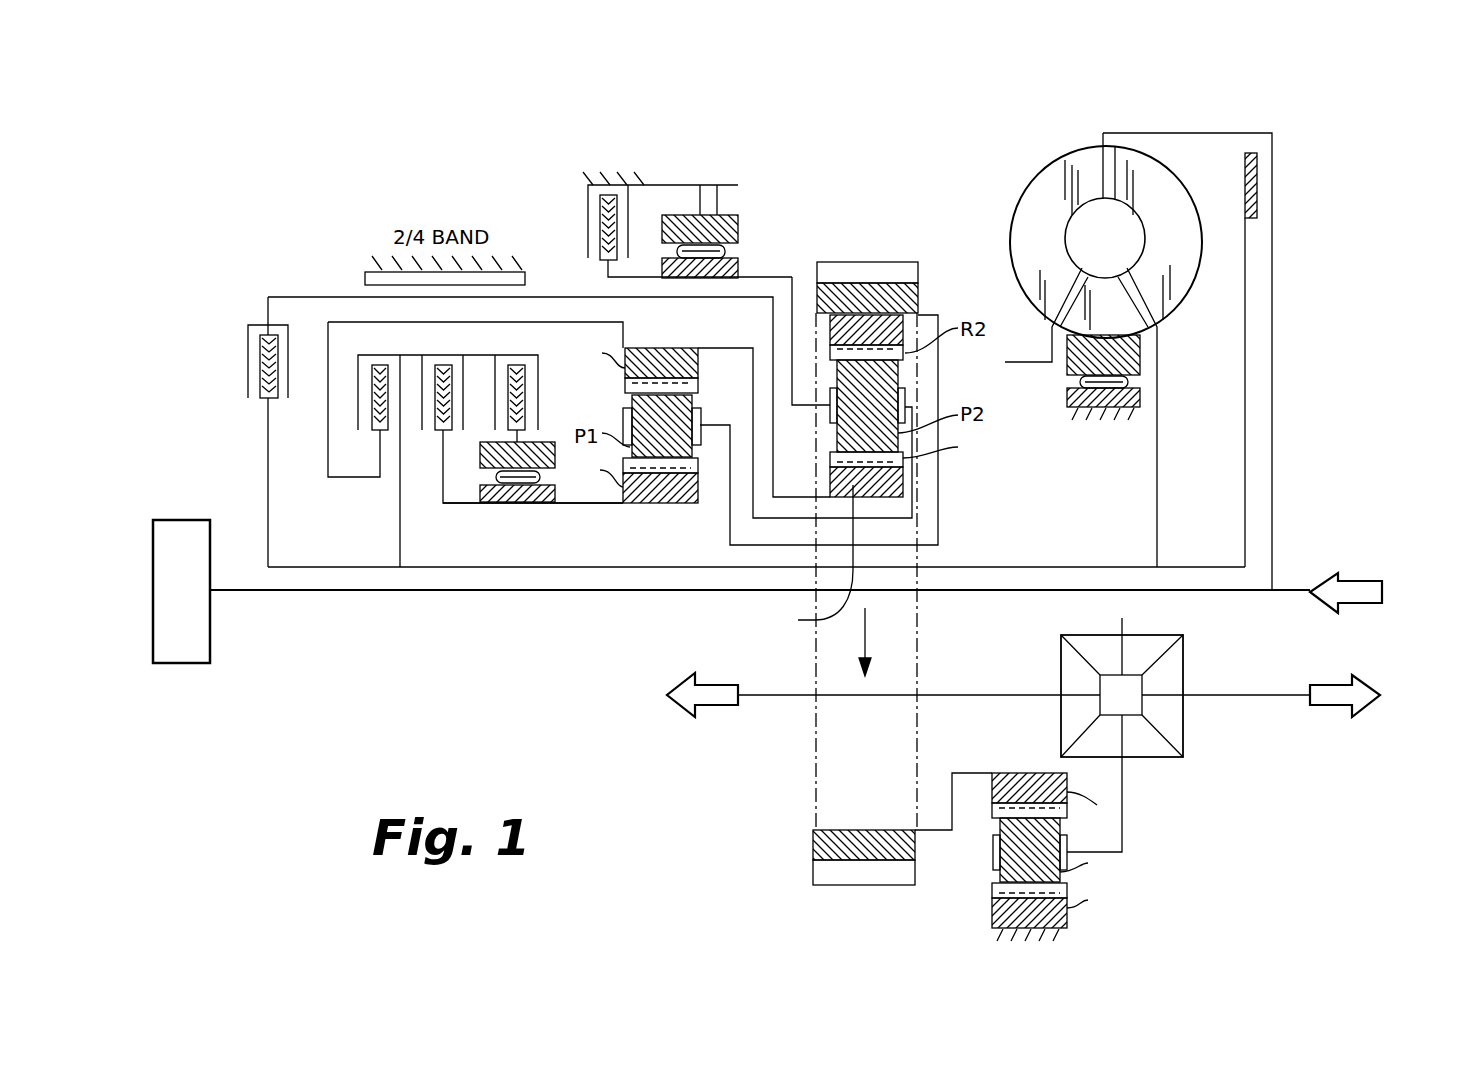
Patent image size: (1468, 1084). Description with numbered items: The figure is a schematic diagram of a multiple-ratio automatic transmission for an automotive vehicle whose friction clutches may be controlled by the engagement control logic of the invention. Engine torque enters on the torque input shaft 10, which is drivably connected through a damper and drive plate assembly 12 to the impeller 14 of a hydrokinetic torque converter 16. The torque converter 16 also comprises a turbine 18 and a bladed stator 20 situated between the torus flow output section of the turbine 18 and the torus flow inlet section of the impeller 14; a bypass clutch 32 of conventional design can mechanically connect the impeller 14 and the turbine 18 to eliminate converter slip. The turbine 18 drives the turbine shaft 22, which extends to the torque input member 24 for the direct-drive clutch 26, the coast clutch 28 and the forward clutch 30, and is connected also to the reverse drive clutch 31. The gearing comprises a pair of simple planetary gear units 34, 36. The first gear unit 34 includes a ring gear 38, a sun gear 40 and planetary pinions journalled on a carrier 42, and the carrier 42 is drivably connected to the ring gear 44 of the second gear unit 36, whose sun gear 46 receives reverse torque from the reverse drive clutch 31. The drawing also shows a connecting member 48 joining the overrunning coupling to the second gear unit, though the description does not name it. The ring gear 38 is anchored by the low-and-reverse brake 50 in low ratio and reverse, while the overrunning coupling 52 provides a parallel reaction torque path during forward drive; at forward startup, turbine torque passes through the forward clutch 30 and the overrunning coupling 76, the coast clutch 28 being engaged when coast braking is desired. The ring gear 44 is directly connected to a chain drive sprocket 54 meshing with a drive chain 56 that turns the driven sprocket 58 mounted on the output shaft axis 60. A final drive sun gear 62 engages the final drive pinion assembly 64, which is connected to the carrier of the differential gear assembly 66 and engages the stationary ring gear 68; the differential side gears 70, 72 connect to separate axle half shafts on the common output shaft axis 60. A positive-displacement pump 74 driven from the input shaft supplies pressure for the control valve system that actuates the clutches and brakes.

The torque input shaft 10 is at (1290, 590).
The damper and drive plate assembly 12 is at (1273, 347).
The impeller 14 is at (1060, 175).
The hydrokinetic torque converter 16 is at (1024, 193).
The turbine 18 is at (1173, 288).
The bladed stator 20 is at (1078, 323).
The turbine shaft 22 is at (605, 567).
The torque input member 24 is at (410, 353).
The direct-drive clutch 26 is at (370, 393).
The coast clutch 28 is at (453, 362).
The forward clutch 30 is at (522, 363).
The reverse drive clutch 31 is at (265, 335).
The bypass clutch 32 is at (1257, 187).
The planetary gear unit 34 is at (653, 506).
The planetary gear unit 36 is at (881, 498).
The ring gear 38 is at (655, 362).
The sun gear 40 is at (678, 492).
The carrier 42 is at (726, 423).
The ring gear 44 is at (817, 297).
The sun gear 46 is at (812, 558).
The connecting member 48 is at (797, 350).
The low-and-reverse brake 50 is at (630, 218).
The overrunning coupling 52 is at (718, 215).
The chain drive sprocket 54 is at (918, 296).
The drive chain 56 is at (917, 655).
The driven sprocket 58 is at (863, 885).
The output shaft axis 60 is at (1218, 697).
The final drive sun gear 62 is at (1028, 782).
The final drive pinion assembly 64 is at (1012, 865).
The differential gear assembly 66 is at (1156, 635).
The stationary ring gear 68 is at (1057, 915).
The side gear 70 is at (1183, 662).
The side gear 72 is at (1060, 677).
The positive-displacement pump 74 is at (195, 617).
The overrunning coupling 76 is at (505, 475).